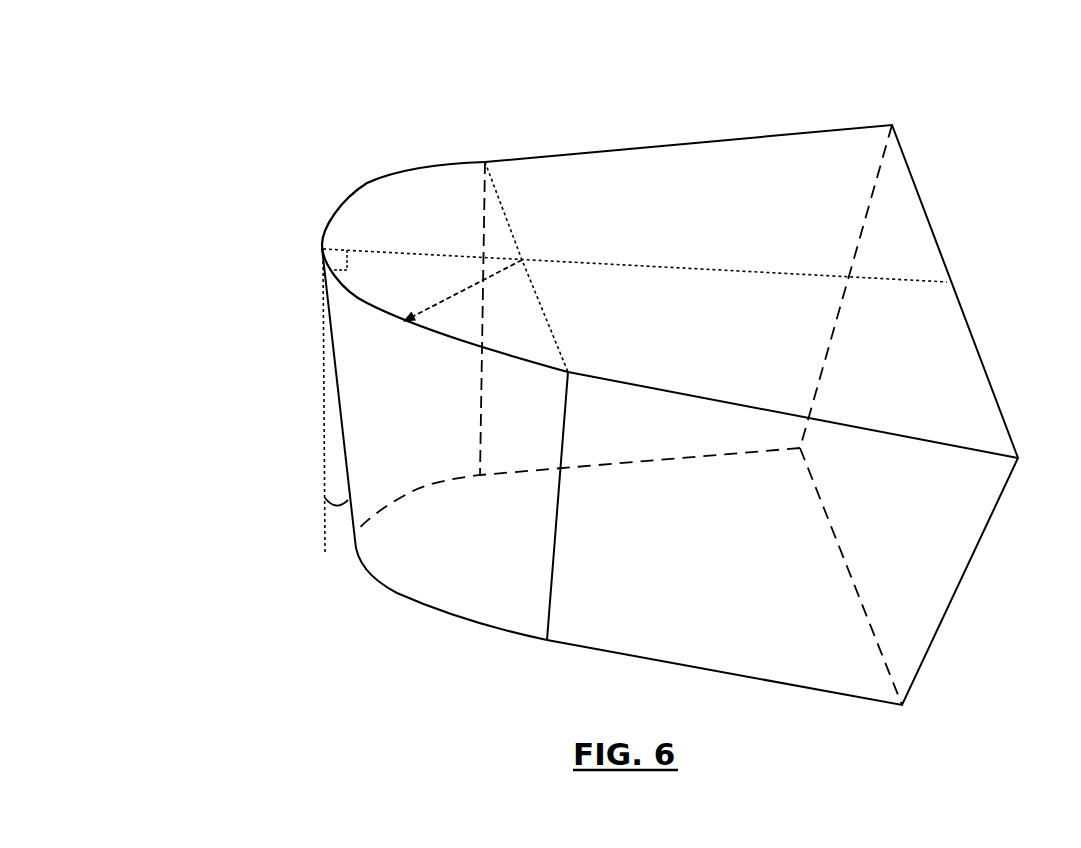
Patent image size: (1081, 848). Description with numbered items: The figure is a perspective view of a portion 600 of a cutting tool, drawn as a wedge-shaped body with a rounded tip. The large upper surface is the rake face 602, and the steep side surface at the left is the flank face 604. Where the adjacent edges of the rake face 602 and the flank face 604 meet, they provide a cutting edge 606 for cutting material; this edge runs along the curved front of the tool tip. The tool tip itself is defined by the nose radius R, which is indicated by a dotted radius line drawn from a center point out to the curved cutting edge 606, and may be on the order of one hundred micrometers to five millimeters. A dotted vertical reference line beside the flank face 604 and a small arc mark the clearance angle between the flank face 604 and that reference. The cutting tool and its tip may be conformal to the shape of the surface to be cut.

The portion of a cutting tool 600 is at (297, 84).
The rake face 602 is at (904, 232).
The flank face 604 is at (335, 368).
The cutting edge 606 is at (325, 222).
The nose radius R is at (455, 290).